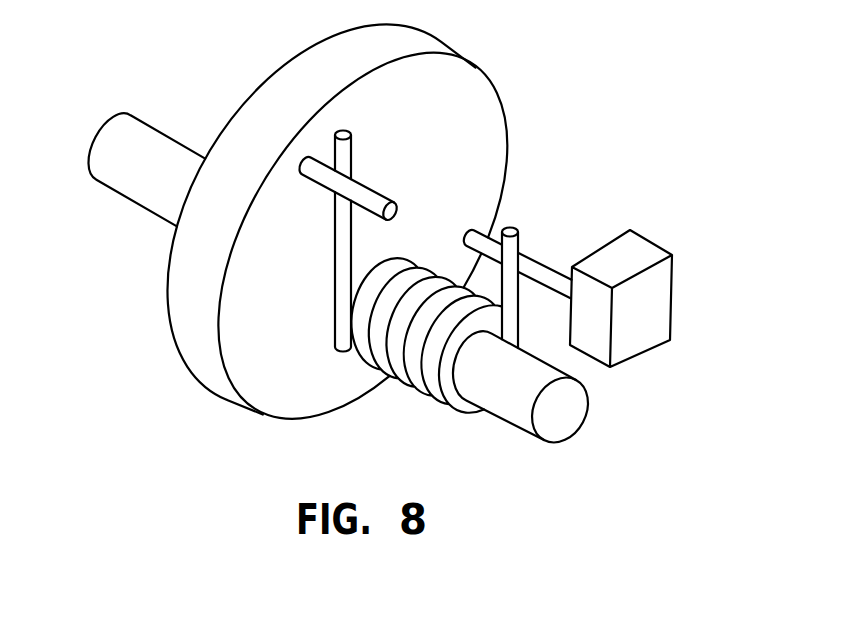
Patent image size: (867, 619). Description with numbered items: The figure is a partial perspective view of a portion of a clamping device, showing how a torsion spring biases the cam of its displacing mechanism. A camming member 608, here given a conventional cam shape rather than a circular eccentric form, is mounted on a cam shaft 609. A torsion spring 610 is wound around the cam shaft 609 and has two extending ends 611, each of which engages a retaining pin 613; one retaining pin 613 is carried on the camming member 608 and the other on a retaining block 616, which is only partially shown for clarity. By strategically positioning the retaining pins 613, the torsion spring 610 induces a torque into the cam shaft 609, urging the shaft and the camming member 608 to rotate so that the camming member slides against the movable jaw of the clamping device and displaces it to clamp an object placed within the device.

The camming member 608 is at (441, 52).
The cam shaft 609 is at (141, 204).
The torsion spring 610 is at (433, 400).
The extending end 611 is at (353, 156).
The retaining pin 613 is at (325, 186).
The retaining block 616 is at (672, 297).